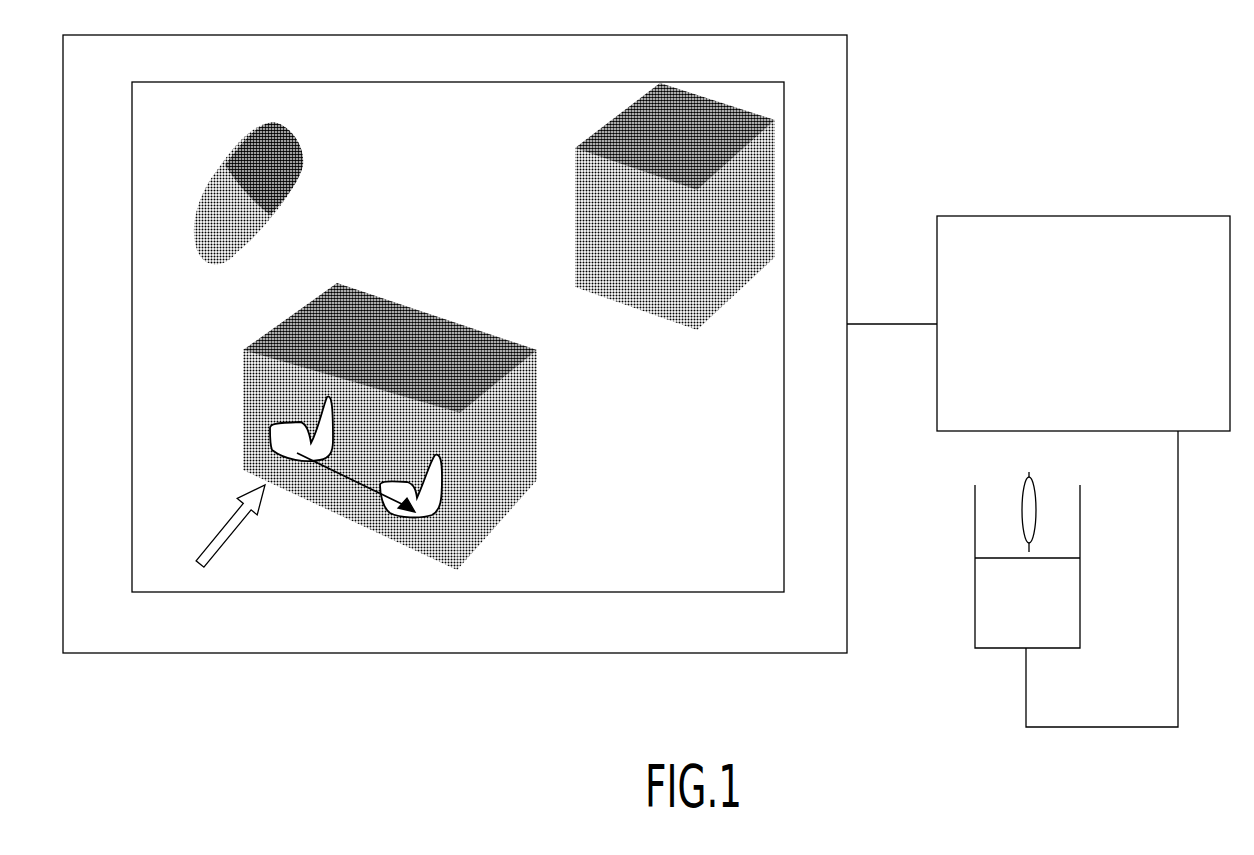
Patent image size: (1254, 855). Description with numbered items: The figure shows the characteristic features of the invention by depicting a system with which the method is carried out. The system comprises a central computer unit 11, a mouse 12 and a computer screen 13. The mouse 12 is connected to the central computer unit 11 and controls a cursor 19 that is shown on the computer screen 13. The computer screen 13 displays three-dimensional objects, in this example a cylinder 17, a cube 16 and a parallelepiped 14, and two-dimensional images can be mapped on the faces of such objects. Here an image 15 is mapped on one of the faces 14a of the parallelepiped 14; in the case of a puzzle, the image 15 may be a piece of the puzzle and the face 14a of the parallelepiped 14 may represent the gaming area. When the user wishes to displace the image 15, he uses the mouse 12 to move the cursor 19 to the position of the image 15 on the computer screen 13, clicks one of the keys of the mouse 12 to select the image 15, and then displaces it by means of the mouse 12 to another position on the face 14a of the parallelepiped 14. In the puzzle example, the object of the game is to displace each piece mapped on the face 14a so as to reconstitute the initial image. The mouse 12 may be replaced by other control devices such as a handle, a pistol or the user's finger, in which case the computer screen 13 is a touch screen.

The central computer unit 11 is at (1052, 216).
The mouse 12 is at (1003, 573).
The computer screen 13 is at (847, 228).
The parallelepiped 14 is at (390, 382).
The face of the parallelepiped 14a is at (405, 432).
The image 15 is at (285, 442).
The cube 16 is at (688, 293).
The cylinder 17 is at (277, 177).
The cursor 19 is at (212, 562).